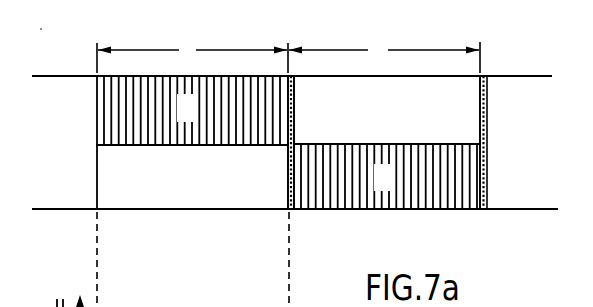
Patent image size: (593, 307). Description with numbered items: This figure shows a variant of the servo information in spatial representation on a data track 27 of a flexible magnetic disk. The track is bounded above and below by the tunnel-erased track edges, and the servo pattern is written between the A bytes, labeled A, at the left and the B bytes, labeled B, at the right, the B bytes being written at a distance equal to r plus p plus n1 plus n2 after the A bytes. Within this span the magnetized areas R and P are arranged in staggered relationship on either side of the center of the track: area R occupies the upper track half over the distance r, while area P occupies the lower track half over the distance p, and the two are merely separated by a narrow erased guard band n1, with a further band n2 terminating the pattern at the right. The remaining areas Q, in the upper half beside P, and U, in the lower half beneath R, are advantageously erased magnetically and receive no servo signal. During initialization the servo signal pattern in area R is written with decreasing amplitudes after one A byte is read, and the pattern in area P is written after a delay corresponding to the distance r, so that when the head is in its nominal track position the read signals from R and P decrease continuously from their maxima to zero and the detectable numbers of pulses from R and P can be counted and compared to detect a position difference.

The data track 27 is at (534, 91).
The magnetized area R is at (192, 110).
The erased area U is at (192, 177).
The erased area Q is at (387, 110).
The magnetized area P is at (387, 176).
The erased guard band n1 is at (294, 100).
The guard band n2 is at (487, 103).
The A bytes A is at (64, 142).
The B bytes B is at (522, 142).
The distance r is at (192, 55).
The distance p is at (384, 55).